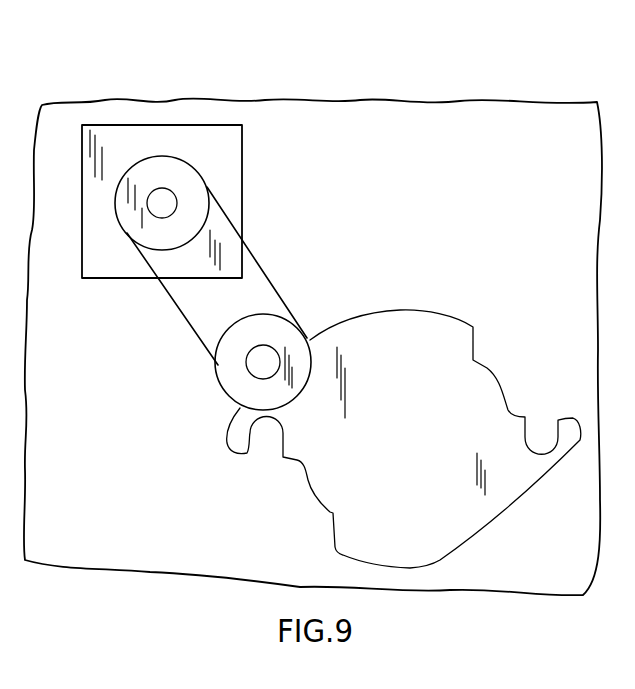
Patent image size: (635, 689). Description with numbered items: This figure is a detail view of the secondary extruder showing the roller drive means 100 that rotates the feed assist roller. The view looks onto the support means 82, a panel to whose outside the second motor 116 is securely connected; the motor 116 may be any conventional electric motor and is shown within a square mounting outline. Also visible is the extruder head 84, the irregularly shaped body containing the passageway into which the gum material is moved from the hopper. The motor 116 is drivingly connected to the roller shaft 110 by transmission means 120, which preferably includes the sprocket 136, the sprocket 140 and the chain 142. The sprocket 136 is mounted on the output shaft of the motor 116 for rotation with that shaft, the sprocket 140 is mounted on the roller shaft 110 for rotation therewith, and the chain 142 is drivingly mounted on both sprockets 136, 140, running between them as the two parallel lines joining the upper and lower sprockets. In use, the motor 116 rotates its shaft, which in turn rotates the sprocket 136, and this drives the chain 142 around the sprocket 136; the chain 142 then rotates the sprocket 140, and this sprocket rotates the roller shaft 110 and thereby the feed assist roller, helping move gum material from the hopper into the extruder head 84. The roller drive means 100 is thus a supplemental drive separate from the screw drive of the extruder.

The support means 82 is at (589, 145).
The extruder head 84 is at (487, 367).
The roller drive means 100 is at (333, 185).
The roller shaft 110 is at (255, 357).
The motor 116 is at (230, 155).
The transmission means 120 is at (241, 276).
The sprocket 136 is at (152, 167).
The sprocket 140 is at (240, 392).
The chain 142 is at (178, 322).